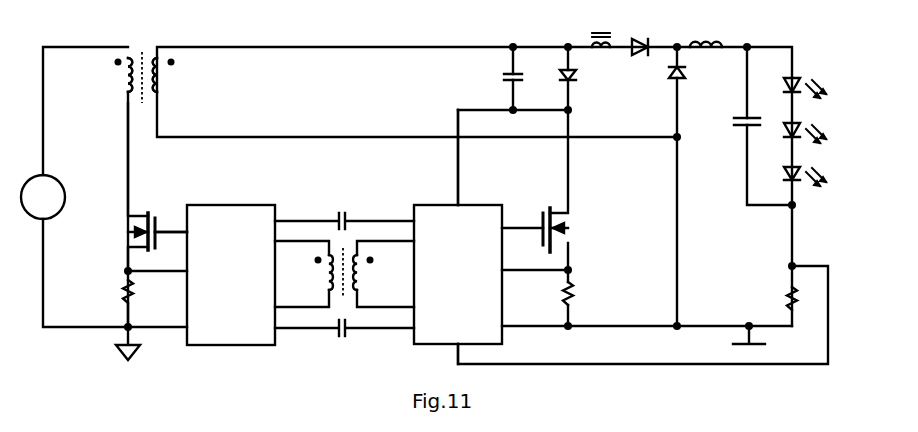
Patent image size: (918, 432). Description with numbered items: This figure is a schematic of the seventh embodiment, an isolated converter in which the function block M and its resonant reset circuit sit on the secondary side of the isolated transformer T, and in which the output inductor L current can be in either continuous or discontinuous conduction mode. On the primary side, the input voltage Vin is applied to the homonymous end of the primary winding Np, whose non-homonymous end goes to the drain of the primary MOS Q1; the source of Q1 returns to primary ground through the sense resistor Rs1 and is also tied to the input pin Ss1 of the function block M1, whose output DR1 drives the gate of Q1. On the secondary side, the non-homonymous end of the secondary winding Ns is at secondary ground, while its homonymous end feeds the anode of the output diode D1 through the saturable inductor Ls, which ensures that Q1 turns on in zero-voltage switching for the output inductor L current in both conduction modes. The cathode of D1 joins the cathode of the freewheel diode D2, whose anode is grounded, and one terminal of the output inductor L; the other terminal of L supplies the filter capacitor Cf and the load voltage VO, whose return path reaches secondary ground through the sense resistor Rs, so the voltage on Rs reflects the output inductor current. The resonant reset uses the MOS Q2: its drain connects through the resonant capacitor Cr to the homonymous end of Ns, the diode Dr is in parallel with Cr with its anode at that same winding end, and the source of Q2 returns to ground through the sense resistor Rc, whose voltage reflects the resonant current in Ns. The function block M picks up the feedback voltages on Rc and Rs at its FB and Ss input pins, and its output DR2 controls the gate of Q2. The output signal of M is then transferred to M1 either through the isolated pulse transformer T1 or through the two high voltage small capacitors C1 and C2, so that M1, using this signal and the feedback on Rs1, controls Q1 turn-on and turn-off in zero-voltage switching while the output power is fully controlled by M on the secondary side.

The isolated transformer T is at (142, 64).
The primary winding Np is at (115, 75).
The secondary winding Ns is at (171, 75).
The input voltage Vin is at (48, 186).
The primary MOS Q1 is at (143, 231).
The sense resistor Rs1 is at (114, 297).
The function block M1 is at (201, 275).
The output of function block M1 DR1 is at (188, 233).
The input pin of function block M1 Ss1 is at (172, 273).
The high voltage small capacitor C1 is at (344, 212).
The high voltage small capacitor C2 is at (344, 336).
The isolated pulse transformer T1 is at (344, 274).
The function block M is at (491, 237).
The output DR2 of function block M DR2 is at (502, 231).
The FB input pin FB is at (523, 273).
The Ss input pin Ss is at (456, 345).
The MOS Q2 is at (568, 230).
The sense resistor Rc is at (556, 299).
The resonant capacitor Cr is at (525, 78).
The diode Dr is at (579, 78).
The saturable inductor Ls is at (587, 37).
The output diode D1 is at (640, 56).
The freewheel diode D2 is at (688, 74).
The output inductor L is at (706, 35).
The filter capacitor Cf is at (741, 134).
The sense resistor Rs is at (779, 299).
The load voltage VO is at (822, 132).